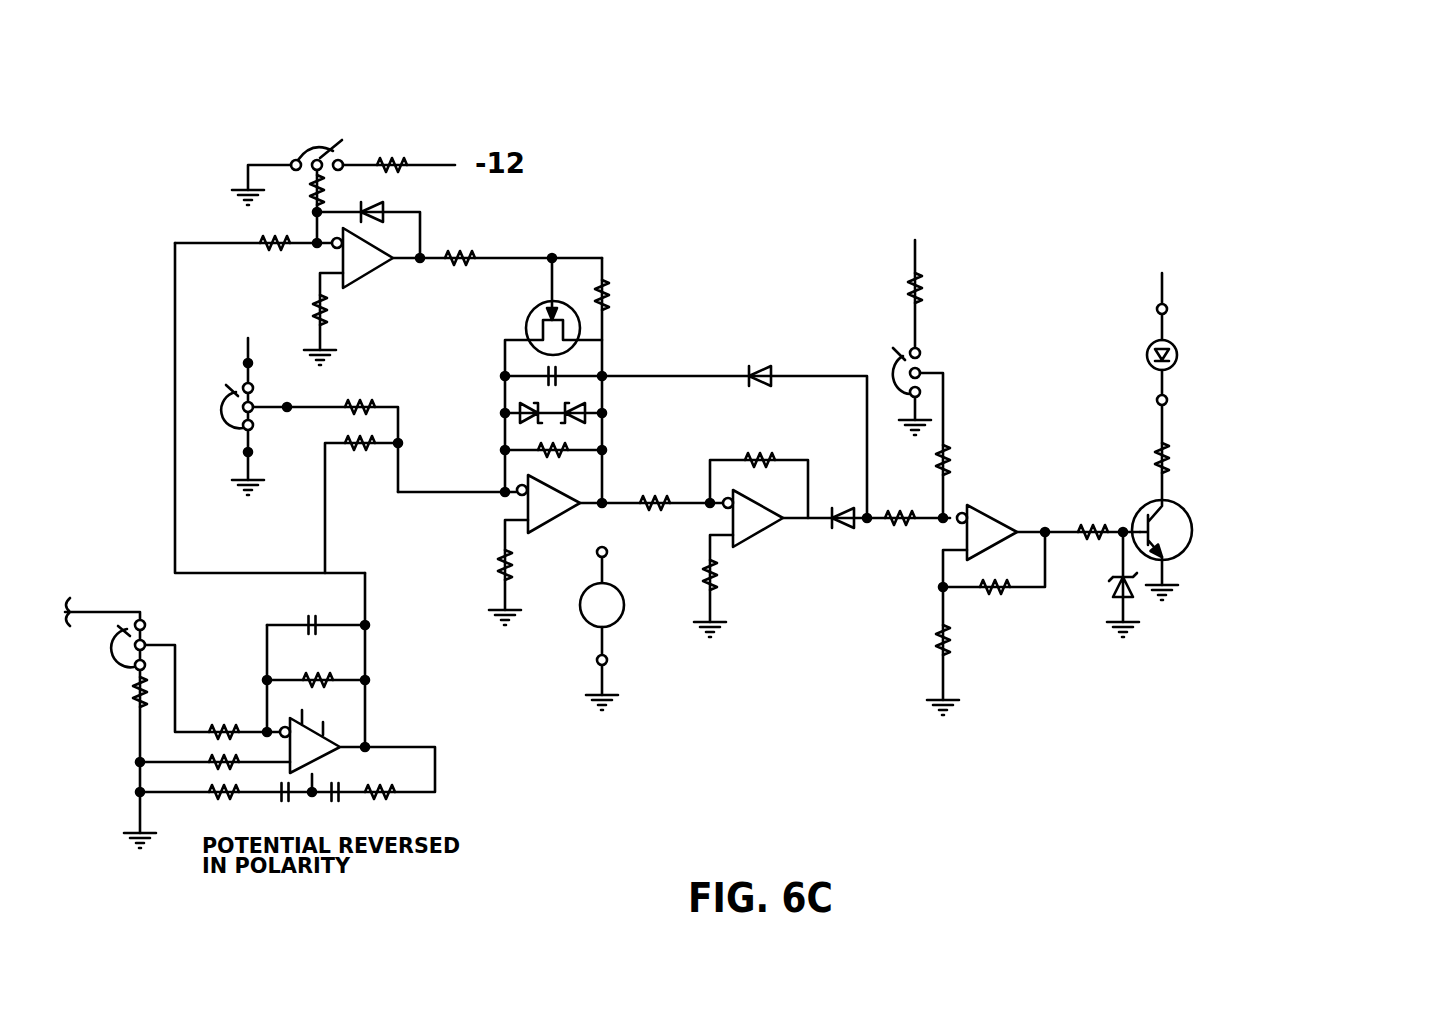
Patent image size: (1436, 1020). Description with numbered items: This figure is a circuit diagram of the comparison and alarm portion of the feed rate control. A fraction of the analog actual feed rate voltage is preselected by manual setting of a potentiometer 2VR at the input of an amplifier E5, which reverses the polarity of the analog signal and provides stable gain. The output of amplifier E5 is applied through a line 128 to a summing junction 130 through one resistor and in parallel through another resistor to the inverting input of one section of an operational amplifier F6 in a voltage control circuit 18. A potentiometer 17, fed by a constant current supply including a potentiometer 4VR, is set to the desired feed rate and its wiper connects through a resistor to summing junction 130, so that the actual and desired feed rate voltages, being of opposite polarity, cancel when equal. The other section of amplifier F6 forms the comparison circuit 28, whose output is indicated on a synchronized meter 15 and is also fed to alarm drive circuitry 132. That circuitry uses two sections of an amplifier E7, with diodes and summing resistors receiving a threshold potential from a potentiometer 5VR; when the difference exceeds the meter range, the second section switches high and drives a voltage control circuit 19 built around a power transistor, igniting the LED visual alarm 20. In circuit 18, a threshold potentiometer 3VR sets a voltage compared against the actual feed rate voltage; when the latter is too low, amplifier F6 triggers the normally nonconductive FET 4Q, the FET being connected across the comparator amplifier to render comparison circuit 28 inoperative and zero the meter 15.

The voltage control circuit 18 is at (413, 73).
The line 128 is at (175, 276).
The summing junction 130 is at (402, 440).
The potentiometer 17 is at (220, 446).
The comparison circuit 28 is at (483, 540).
The synchronized meter 15 is at (630, 624).
The alarm drive circuitry 132 is at (805, 605).
The voltage control circuit 19 is at (1200, 512).
The LED visual alarm 20 is at (1185, 337).
The threshold potentiometer 3VR is at (288, 159).
The variable resistor 4VR is at (225, 403).
The potentiometer 2VR is at (101, 715).
The threshold potentiometer 5VR is at (896, 422).
The FET 4Q is at (546, 375).
The element FET is at (590, 326).
The operational amplifier F6 is at (372, 258).
The amplifier E5 is at (318, 684).
The amplifier E7 is at (880, 524).